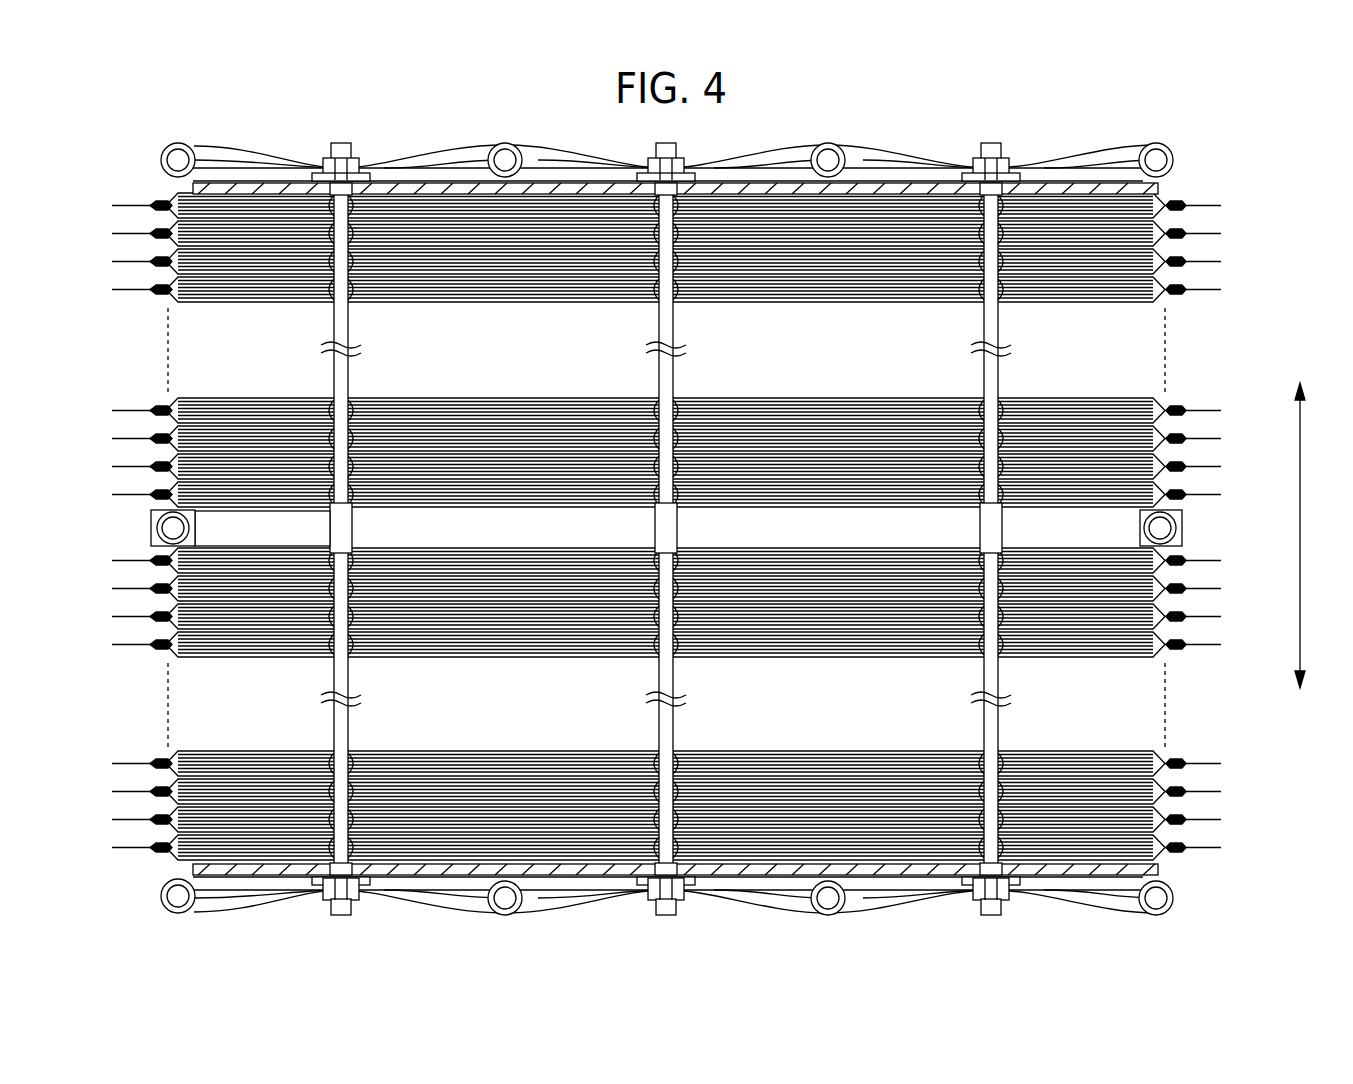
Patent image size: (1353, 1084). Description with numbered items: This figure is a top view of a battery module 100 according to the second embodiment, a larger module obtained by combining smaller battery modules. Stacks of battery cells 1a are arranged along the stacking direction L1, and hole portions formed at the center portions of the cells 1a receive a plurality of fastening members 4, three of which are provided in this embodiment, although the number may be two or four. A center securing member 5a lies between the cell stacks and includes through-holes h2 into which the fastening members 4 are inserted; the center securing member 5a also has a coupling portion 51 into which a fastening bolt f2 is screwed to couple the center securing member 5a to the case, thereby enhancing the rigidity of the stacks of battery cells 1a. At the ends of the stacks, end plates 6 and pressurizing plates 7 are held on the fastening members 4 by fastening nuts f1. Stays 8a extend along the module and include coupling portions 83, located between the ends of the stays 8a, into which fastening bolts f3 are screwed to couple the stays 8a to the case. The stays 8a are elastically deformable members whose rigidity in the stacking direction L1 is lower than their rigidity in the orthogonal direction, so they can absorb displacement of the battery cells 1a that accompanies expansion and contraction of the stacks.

The battery module 100 is at (1186, 106).
The battery cells 1a is at (1246, 191).
The fastening members 4 is at (368, 187).
The through-holes h2 is at (318, 517).
The coupling portion 51 is at (142, 512).
The fastening bolt f2 is at (163, 521).
The center securing member 5a is at (308, 518).
The stacking direction L1 is at (1294, 515).
The fastening bolts f3 is at (165, 884).
The coupling portions 83 is at (152, 893).
The stays 8a is at (213, 895).
The end plates 6 is at (292, 867).
The fastening nuts f1 is at (322, 895).
The pressurizing plates 7 is at (372, 878).